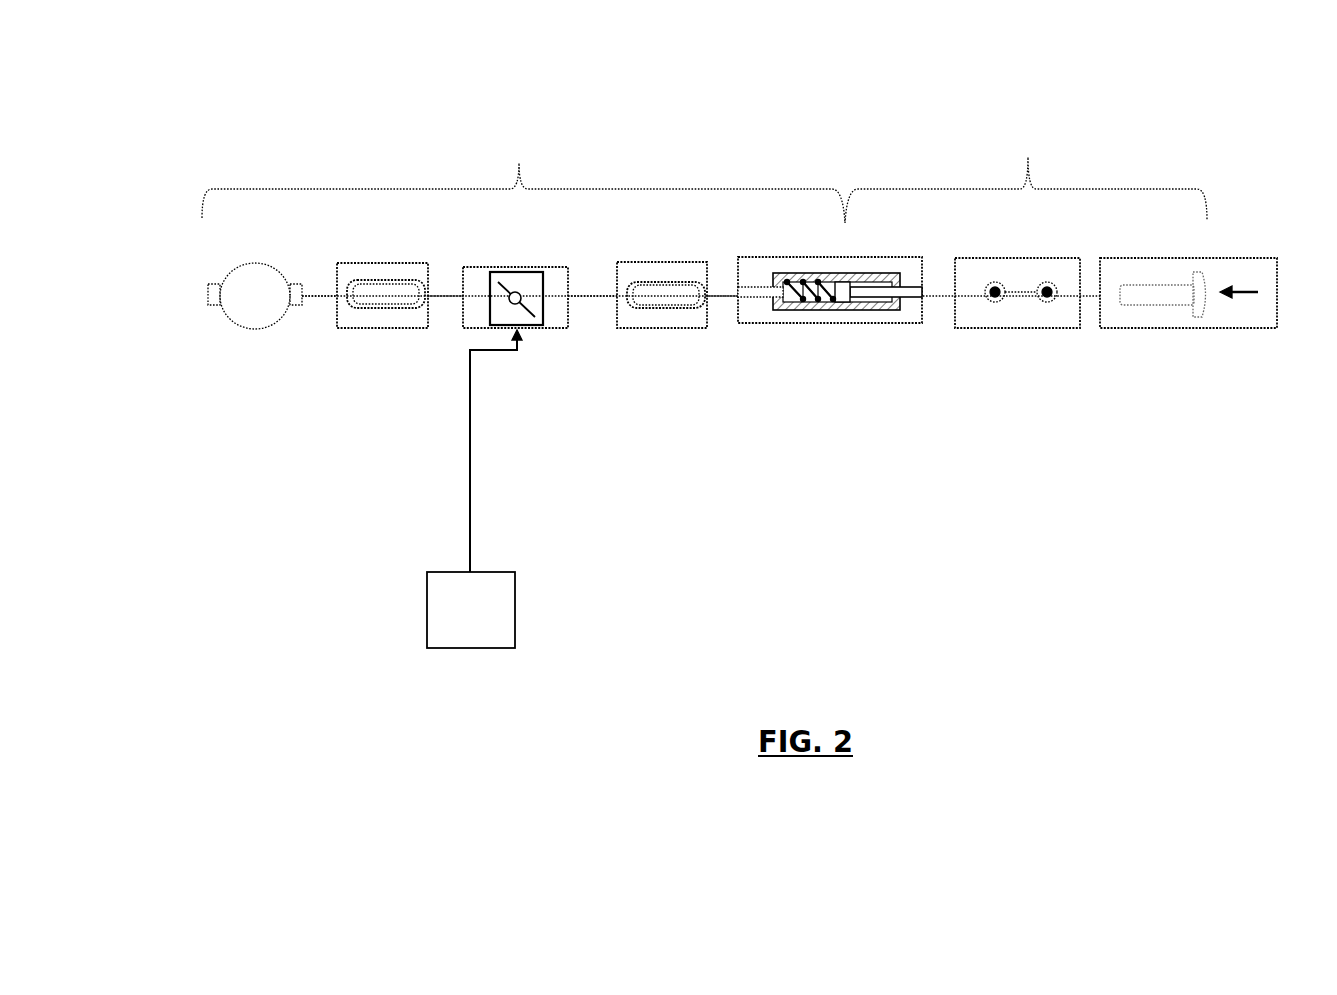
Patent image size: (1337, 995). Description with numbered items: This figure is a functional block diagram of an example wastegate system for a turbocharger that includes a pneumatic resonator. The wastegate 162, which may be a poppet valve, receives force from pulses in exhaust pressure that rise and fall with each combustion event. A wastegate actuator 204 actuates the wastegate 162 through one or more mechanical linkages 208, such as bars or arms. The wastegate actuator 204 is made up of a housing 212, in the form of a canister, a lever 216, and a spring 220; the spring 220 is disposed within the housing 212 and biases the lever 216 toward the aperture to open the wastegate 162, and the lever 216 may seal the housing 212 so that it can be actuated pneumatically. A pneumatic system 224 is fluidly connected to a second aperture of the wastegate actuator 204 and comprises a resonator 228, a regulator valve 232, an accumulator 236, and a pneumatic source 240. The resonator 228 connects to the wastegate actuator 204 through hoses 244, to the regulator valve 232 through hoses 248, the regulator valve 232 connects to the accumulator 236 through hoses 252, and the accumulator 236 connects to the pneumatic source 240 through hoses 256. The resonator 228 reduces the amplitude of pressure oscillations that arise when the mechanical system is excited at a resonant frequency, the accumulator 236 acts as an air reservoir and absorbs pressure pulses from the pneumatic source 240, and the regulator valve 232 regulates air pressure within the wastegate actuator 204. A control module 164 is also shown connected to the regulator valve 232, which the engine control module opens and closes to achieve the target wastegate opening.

The wastegate 162 is at (1242, 258).
The controller 164 is at (493, 650).
The wastegate actuator 204 is at (842, 214).
The mechanical linkages 208 is at (970, 328).
The housing 212 is at (842, 258).
The lever 216 is at (873, 289).
The spring 220 is at (795, 302).
The pneumatic system 224 is at (704, 164).
The resonator 228 is at (652, 262).
The regulator valve 232 is at (490, 270).
The accumulator 236 is at (381, 262).
The pneumatic source 240 is at (254, 263).
The hoses 244 is at (725, 297).
The hoses 248 is at (592, 297).
The hoses 252 is at (447, 296).
The hoses 256 is at (325, 296).